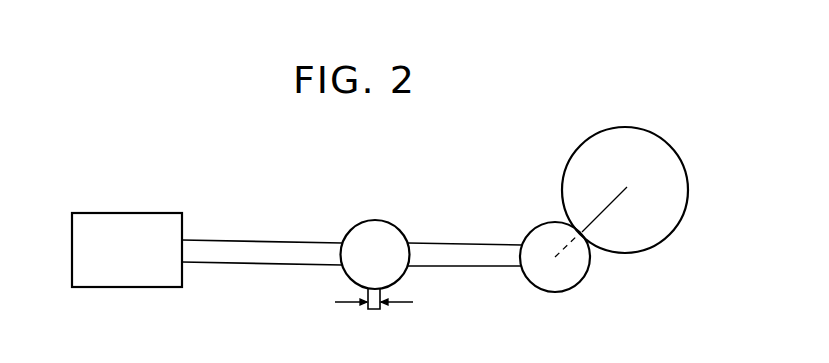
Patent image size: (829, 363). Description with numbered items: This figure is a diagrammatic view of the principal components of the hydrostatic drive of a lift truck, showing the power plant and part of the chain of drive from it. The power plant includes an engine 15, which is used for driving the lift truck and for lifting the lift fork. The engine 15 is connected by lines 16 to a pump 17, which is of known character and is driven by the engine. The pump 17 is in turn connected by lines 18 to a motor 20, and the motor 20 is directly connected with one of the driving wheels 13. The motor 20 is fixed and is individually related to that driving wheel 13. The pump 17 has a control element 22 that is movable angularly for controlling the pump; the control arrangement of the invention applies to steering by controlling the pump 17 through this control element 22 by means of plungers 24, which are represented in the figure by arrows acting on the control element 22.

The driving wheel 13 is at (670, 195).
The engine 15 is at (112, 225).
The lines 16 is at (235, 262).
The pump 17 is at (372, 228).
The lines 18 is at (472, 267).
The motor 20 is at (577, 268).
The control element 22 is at (376, 312).
The plungers 24 is at (344, 302).